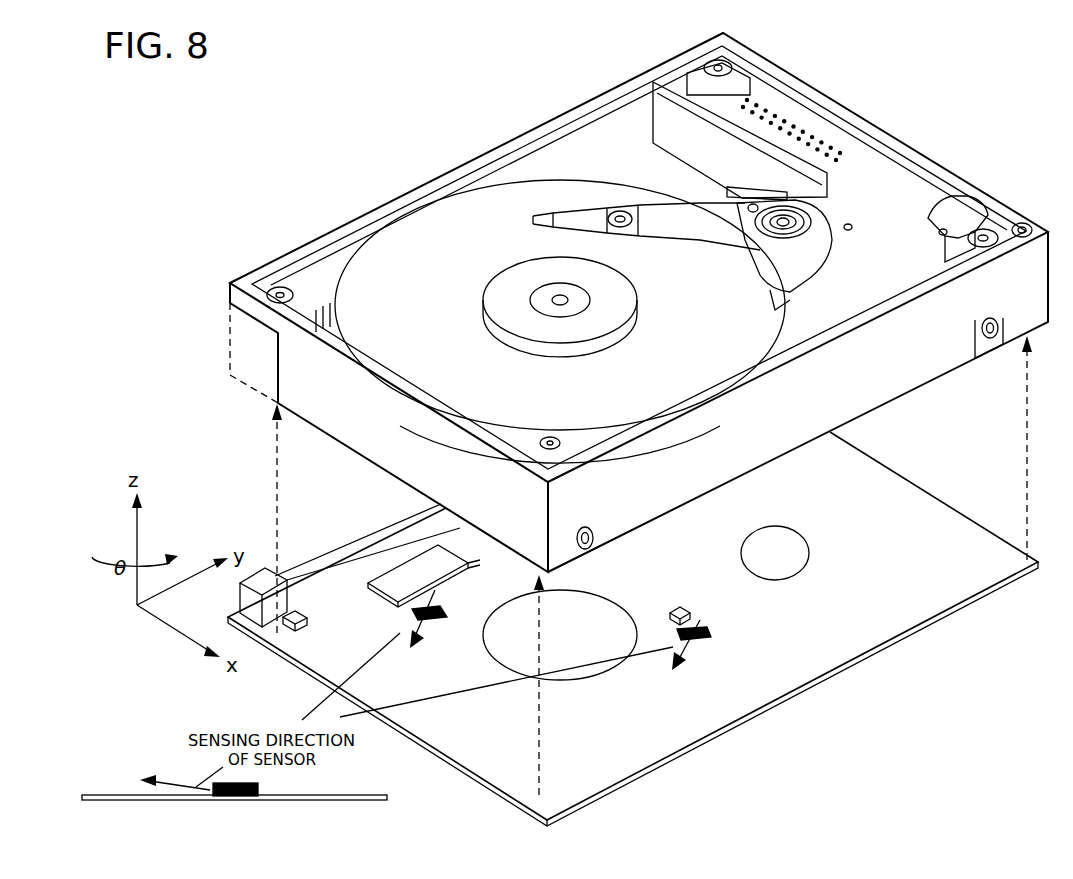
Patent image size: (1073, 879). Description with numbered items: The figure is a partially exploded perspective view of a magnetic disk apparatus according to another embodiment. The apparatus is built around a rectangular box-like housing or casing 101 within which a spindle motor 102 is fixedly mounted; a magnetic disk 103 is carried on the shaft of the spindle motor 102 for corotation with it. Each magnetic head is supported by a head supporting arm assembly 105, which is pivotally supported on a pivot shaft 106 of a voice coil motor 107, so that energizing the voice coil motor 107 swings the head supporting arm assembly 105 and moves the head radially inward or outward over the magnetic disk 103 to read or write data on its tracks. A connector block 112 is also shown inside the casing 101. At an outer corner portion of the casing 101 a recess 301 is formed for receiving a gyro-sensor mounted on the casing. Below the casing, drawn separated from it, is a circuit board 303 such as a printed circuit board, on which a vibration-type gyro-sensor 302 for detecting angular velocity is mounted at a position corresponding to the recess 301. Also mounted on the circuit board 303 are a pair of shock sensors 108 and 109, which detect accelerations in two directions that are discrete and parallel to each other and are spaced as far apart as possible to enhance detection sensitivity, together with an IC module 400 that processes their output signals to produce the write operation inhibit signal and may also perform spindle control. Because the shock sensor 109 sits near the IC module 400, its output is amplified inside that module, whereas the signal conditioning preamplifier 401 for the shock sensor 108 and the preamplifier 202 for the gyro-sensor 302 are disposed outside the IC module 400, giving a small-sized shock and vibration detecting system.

The box-like housing 101 is at (872, 395).
The spindle motor 102 is at (525, 270).
The magnetic disk 103 is at (407, 279).
The head supporting arm assembly 105 is at (653, 222).
The pivot shaft 106 is at (797, 222).
The voice coil motor 107 is at (933, 220).
The connector board 112 is at (790, 122).
The recess 301 is at (240, 344).
The vibration-type gyro-sensor 302 is at (275, 570).
The circuit board 303 is at (893, 607).
The IC module 400 is at (422, 550).
The signal conditioning preamplifier 401 is at (300, 631).
The shock sensor 108 is at (712, 633).
The shock sensor 109 is at (432, 620).
The preamplifier 202 is at (683, 610).